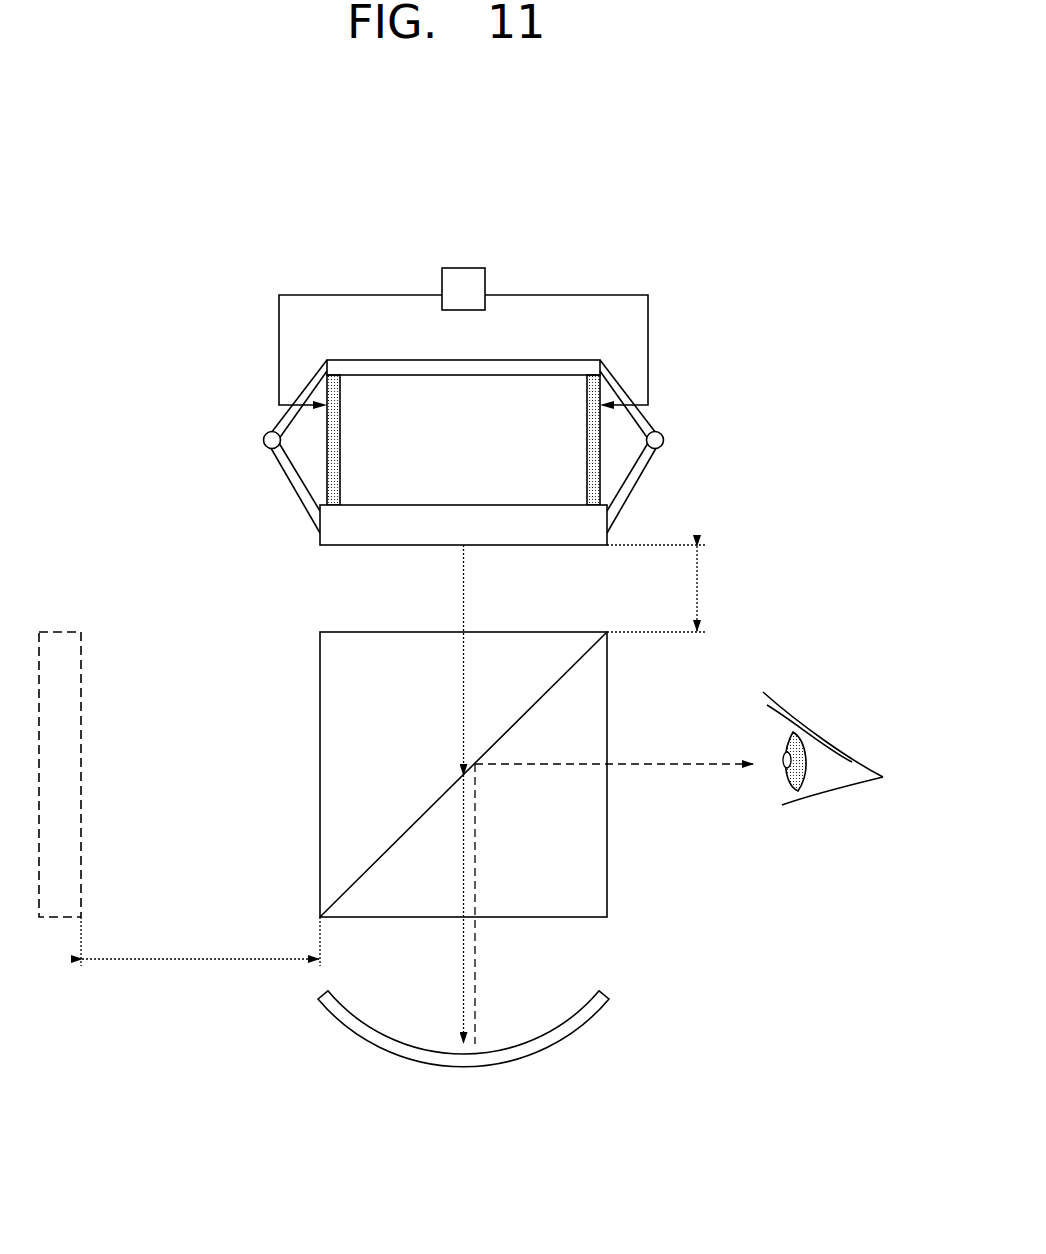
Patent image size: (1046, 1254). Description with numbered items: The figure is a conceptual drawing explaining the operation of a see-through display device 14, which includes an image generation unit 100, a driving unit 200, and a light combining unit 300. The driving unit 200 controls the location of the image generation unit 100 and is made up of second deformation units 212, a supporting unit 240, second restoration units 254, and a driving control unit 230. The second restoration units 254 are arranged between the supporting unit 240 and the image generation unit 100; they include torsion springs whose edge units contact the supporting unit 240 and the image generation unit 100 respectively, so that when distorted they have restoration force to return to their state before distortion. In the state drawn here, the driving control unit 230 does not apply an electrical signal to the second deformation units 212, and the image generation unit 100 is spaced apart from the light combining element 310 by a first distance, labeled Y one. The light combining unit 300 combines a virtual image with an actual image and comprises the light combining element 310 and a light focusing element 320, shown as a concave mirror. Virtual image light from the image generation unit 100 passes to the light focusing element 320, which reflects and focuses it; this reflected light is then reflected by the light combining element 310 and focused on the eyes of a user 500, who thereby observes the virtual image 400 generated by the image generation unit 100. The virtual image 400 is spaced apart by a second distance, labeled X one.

The see-through display device 14 is at (774, 202).
The image generation unit 100 is at (600, 527).
The driving unit 200 is at (718, 273).
The second deformation units 212 is at (598, 428).
The driving control unit 230 is at (467, 280).
The supporting unit 240 is at (587, 366).
The second restoration units 254 is at (615, 388).
The light combining unit 300 is at (712, 880).
The light combining element 310 is at (608, 884).
The light focusing element 320 is at (609, 997).
The virtual image 400 is at (60, 632).
The user 500 is at (828, 782).